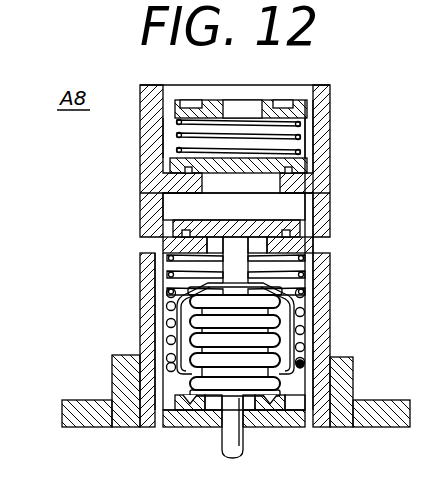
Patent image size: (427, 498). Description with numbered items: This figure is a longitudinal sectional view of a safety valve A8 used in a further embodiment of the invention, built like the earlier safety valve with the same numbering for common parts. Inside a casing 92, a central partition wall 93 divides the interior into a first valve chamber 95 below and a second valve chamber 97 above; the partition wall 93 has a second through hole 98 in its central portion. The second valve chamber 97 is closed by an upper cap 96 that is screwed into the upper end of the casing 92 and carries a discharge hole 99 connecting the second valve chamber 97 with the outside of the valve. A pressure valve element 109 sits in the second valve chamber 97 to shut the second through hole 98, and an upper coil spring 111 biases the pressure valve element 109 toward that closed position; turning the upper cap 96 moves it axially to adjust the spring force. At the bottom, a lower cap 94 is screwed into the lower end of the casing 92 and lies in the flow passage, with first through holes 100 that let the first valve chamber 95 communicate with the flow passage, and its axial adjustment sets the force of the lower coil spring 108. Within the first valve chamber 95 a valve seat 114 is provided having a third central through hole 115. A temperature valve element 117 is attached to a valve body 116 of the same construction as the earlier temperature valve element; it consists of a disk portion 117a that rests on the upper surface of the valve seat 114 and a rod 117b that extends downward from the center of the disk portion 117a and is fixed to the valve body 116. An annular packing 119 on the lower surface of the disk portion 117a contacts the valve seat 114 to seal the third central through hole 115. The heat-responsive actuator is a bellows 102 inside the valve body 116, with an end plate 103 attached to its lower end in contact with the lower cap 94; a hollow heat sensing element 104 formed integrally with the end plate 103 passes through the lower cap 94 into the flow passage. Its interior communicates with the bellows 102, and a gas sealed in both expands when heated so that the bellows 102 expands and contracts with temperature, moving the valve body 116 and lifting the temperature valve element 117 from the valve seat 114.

The casing 92 is at (322, 209).
The central partition wall 93 is at (310, 182).
The lower cap 94 is at (209, 412).
The first valve chamber 95 is at (312, 290).
The upper cap 96 is at (263, 100).
The second valve chamber 97 is at (172, 142).
The second through hole 98 is at (172, 182).
The discharge hole 99 is at (307, 109).
The first through hole 100 is at (299, 411).
The bellows 102 is at (300, 363).
The end plate 103 is at (178, 411).
The heat sensing element 104 is at (243, 440).
The lower coil spring 108 is at (177, 305).
The pressure valve element 109 is at (302, 168).
The upper coil spring 111 is at (302, 138).
The valve seat 114 is at (237, 247).
The third central through hole 115 is at (308, 275).
The valve body 116 is at (312, 331).
The temperature valve element 117 is at (236, 234).
The disk portion 117a is at (182, 233).
The rod 117b is at (165, 250).
The annular packing 119 is at (300, 236).